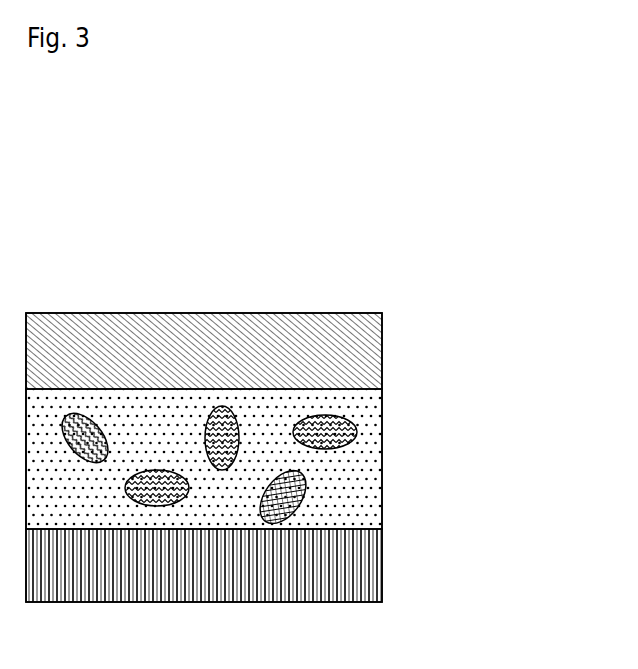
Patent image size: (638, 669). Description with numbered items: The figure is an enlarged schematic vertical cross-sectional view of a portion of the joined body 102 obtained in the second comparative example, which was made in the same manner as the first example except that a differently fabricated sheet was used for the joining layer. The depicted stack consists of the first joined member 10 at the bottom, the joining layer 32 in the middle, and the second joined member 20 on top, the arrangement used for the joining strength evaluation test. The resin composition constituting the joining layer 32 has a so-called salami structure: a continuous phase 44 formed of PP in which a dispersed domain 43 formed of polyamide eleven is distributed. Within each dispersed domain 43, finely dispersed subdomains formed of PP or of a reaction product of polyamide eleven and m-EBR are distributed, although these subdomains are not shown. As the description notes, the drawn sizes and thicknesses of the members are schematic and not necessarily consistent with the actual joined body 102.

The joined body 102 is at (333, 273).
The second joined member 20 is at (382, 360).
The joining layer 32 is at (311, 460).
The continuous phase 44 is at (257, 465).
The dispersed domain 43 is at (303, 500).
The first joined member 10 is at (382, 588).